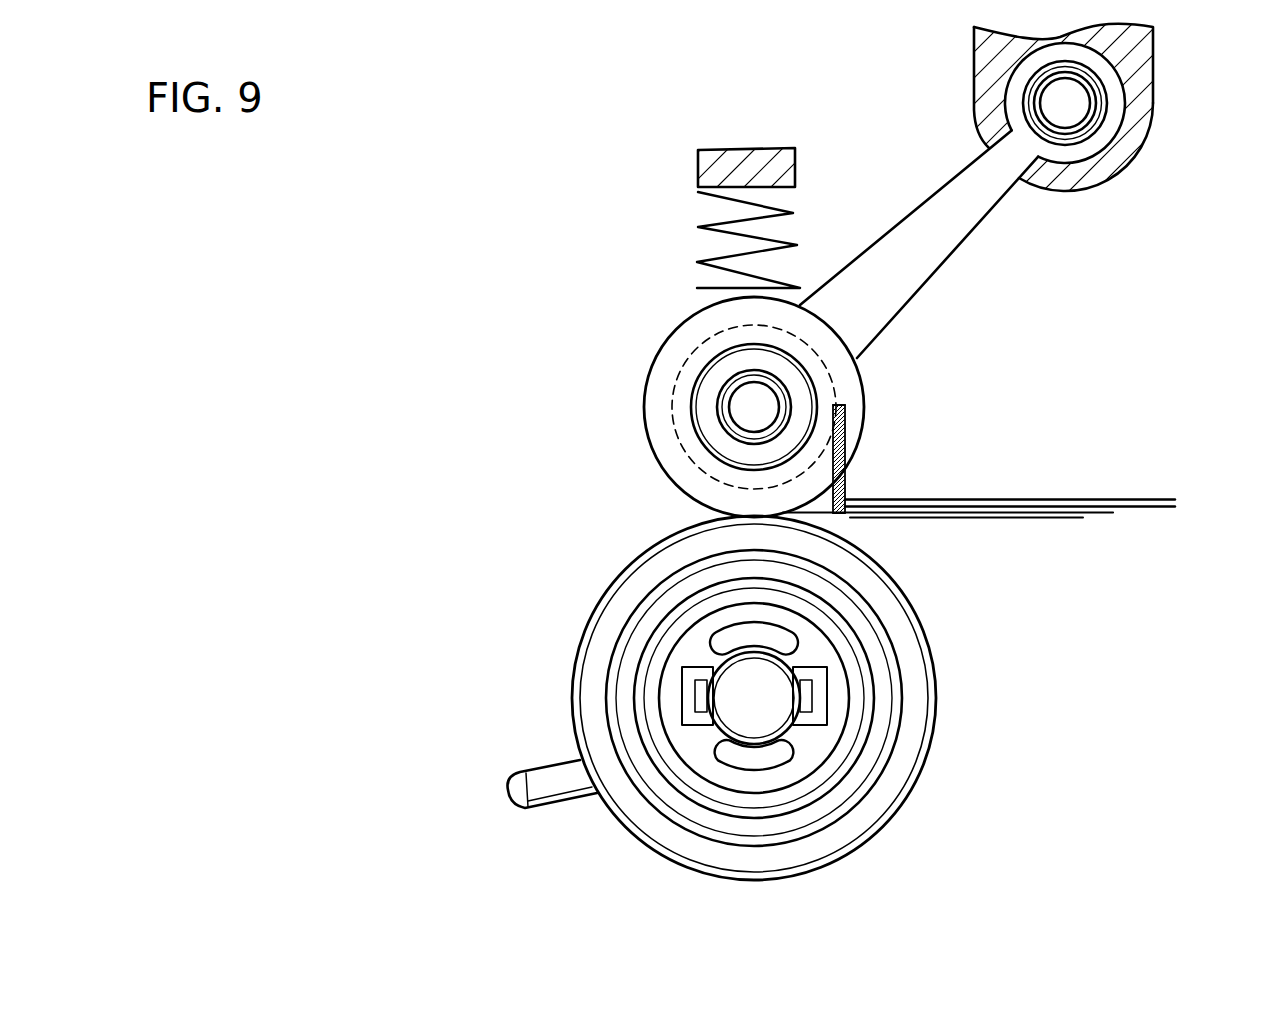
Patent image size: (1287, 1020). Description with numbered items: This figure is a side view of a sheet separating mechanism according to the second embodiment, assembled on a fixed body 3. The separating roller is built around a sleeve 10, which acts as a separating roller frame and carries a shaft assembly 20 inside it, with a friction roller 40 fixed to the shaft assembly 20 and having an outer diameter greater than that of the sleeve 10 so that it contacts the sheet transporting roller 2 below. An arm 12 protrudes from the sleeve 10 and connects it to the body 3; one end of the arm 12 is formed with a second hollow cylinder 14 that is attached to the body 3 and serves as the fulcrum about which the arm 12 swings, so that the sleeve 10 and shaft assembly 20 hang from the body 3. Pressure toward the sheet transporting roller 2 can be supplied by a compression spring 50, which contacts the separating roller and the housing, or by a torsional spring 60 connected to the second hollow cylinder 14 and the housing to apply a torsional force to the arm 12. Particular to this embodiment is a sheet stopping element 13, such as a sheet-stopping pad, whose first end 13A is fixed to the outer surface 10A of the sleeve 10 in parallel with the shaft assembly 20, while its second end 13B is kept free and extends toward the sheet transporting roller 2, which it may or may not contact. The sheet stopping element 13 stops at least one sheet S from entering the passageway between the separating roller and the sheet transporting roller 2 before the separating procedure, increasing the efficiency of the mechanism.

The sheet transporting roller 2 is at (937, 738).
The body 3 is at (753, 155).
The sleeve 10 is at (888, 351).
The outer surface of the sleeve 10A is at (683, 368).
The arm 12 is at (925, 264).
The sheet stopping element 13 is at (845, 447).
The first end 13A is at (845, 406).
The second end 13B is at (847, 518).
The second hollow cylinder 14 is at (1113, 183).
The shaft assembly 20 is at (738, 415).
The friction roller 40 is at (643, 400).
The compression spring 50 is at (703, 228).
The torsional spring 60 is at (1102, 125).
The sheet S is at (1073, 498).